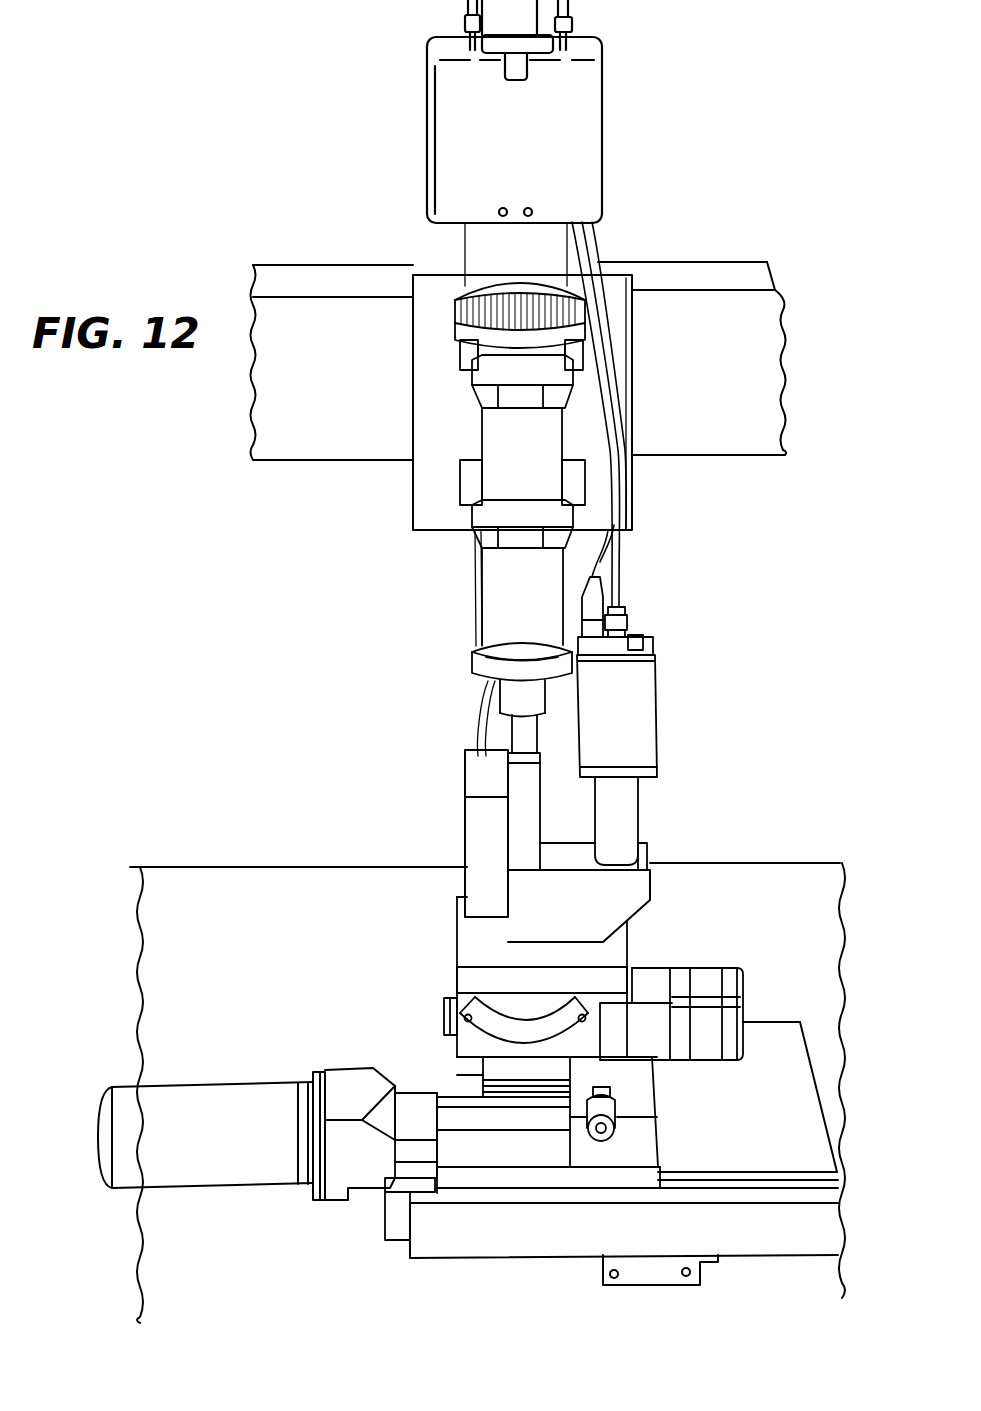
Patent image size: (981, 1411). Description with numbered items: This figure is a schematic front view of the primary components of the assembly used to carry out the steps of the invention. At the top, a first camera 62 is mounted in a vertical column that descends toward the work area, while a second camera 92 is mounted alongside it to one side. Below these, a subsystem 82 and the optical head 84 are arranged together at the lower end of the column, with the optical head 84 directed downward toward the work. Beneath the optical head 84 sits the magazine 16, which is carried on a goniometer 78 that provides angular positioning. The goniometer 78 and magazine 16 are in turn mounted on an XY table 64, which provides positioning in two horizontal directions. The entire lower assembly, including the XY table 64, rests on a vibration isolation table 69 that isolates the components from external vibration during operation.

The magazine 16 is at (522, 978).
The camera 62 is at (497, 573).
The XY table 64 is at (727, 1150).
The vibration isolation table 69 is at (200, 1290).
The goniometer 78 is at (497, 1017).
The subsystem 82 is at (483, 830).
The optical head 84 is at (628, 889).
The camera 92 is at (628, 699).